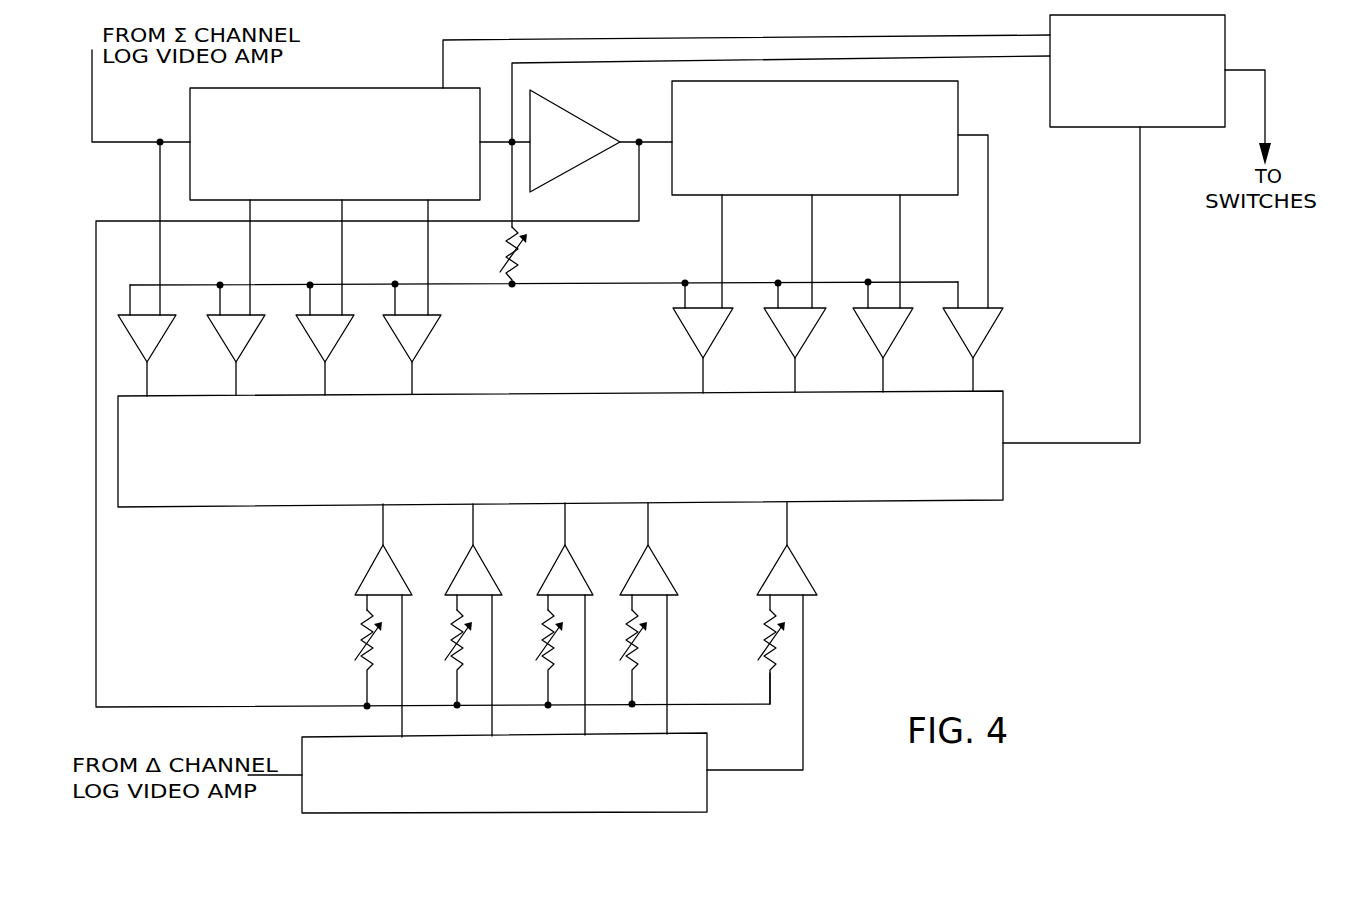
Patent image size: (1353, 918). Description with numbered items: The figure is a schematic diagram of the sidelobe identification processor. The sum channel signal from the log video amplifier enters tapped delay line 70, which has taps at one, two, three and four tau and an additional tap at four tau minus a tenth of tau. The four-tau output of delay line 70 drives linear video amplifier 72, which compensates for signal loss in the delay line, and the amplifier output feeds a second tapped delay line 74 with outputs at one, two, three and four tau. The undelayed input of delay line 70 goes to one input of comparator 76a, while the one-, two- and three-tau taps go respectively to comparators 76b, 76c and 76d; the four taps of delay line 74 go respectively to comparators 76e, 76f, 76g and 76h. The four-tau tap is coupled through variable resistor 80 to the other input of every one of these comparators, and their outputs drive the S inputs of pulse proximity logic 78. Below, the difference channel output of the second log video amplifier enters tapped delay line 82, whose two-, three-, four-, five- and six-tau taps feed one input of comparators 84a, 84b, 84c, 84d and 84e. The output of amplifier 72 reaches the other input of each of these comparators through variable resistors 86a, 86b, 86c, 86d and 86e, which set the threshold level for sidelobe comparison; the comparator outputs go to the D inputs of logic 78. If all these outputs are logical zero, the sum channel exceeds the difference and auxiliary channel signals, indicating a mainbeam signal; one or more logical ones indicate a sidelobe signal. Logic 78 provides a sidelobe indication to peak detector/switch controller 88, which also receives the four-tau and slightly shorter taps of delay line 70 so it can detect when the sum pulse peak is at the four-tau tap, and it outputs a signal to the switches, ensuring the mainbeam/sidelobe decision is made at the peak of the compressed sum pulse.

The tapped delay line 70 is at (360, 88).
The linear video amplifier 72 is at (568, 110).
The tapped delay line 74 is at (958, 92).
The comparator 76a is at (163, 336).
The comparator 76b is at (252, 336).
The comparator 76c is at (341, 336).
The comparator 76d is at (428, 336).
The comparator 76e is at (687, 330).
The comparator 76f is at (779, 330).
The comparator 76g is at (867, 330).
The comparator 76h is at (957, 330).
The pulse proximity logic 78 is at (1003, 397).
The variable resistor 80 is at (510, 254).
The tapped delay line 82 is at (707, 747).
The comparator 84a is at (366, 574).
The comparator 84b is at (456, 574).
The comparator 84c is at (548, 574).
The comparator 84d is at (631, 574).
The comparator 84e is at (770, 574).
The variable resistor 86a is at (360, 648).
The variable resistor 86b is at (450, 648).
The variable resistor 86c is at (541, 648).
The variable resistor 86d is at (626, 648).
The variable resistor 86e is at (764, 648).
The peak detector/switch controller 88 is at (1225, 45).